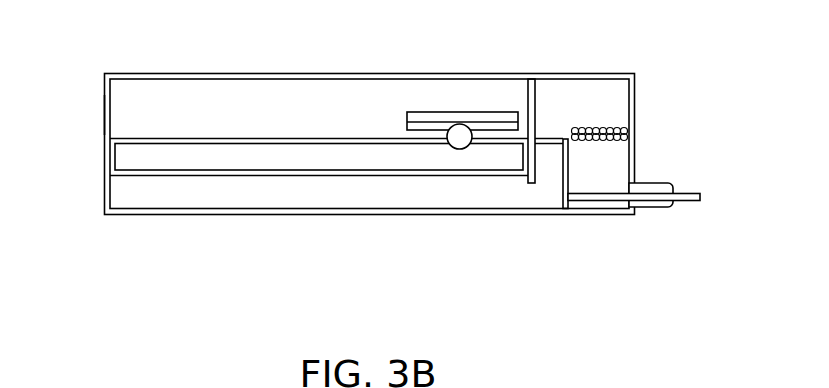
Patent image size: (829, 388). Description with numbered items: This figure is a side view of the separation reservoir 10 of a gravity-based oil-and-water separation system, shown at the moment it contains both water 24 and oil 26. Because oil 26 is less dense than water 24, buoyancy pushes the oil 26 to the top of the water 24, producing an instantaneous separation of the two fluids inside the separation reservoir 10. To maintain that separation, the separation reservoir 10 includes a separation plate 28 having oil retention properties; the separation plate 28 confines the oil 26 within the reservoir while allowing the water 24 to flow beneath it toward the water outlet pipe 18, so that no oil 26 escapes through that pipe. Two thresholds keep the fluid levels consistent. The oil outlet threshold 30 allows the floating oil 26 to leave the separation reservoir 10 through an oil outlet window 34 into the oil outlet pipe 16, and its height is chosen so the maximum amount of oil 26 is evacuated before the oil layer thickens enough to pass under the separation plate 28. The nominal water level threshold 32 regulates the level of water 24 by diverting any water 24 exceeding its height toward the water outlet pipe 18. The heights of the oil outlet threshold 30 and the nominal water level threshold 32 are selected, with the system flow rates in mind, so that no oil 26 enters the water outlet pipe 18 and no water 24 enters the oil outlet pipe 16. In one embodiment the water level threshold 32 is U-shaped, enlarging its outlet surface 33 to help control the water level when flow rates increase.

The separation reservoir 10 is at (104, 110).
The oil outlet pipe 16 is at (460, 134).
The water outlet pipe 18 is at (661, 183).
The water 24 is at (190, 190).
The oil 26 is at (148, 156).
The separation plate 28 is at (536, 111).
The oil outlet threshold 30 is at (430, 122).
The nominal water level threshold 32 is at (570, 173).
The outlet surface 33 is at (598, 132).
The oil outlet window 34 is at (488, 115).